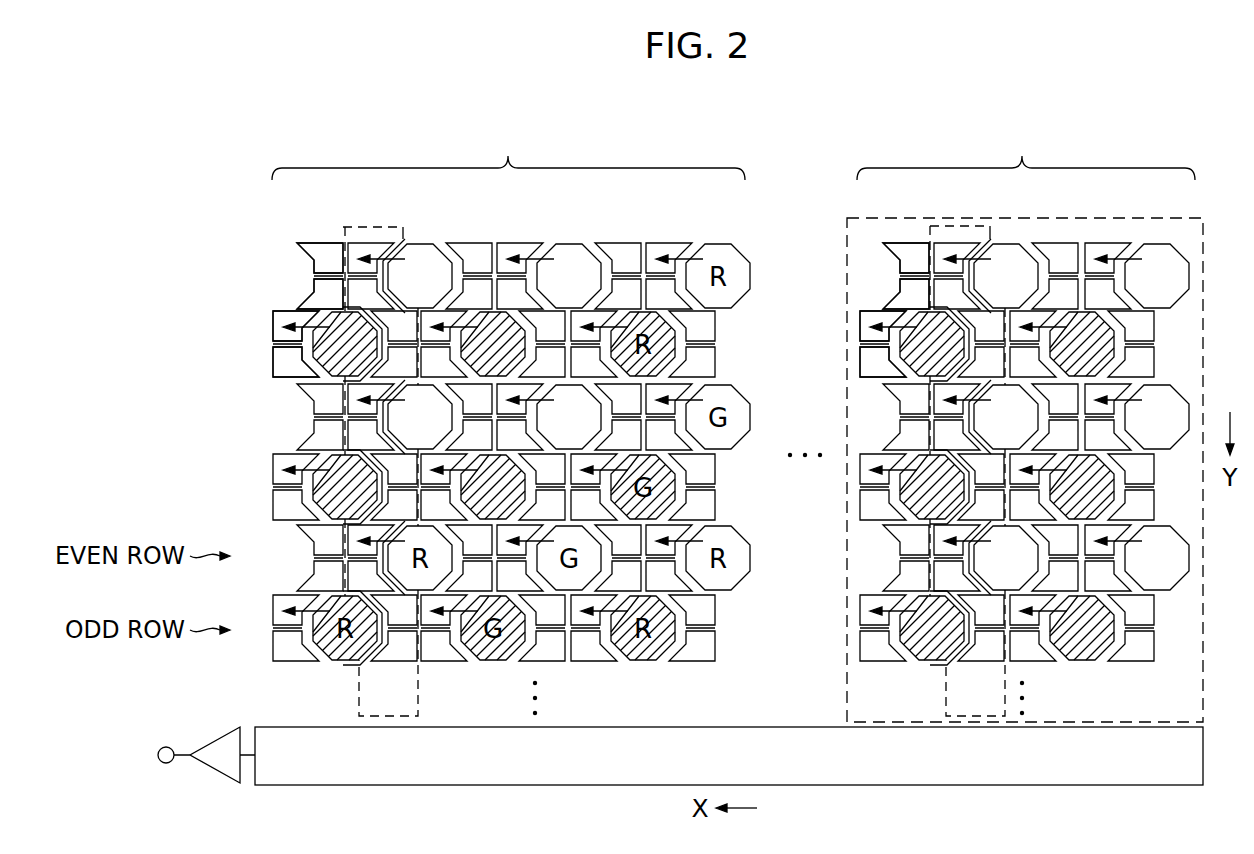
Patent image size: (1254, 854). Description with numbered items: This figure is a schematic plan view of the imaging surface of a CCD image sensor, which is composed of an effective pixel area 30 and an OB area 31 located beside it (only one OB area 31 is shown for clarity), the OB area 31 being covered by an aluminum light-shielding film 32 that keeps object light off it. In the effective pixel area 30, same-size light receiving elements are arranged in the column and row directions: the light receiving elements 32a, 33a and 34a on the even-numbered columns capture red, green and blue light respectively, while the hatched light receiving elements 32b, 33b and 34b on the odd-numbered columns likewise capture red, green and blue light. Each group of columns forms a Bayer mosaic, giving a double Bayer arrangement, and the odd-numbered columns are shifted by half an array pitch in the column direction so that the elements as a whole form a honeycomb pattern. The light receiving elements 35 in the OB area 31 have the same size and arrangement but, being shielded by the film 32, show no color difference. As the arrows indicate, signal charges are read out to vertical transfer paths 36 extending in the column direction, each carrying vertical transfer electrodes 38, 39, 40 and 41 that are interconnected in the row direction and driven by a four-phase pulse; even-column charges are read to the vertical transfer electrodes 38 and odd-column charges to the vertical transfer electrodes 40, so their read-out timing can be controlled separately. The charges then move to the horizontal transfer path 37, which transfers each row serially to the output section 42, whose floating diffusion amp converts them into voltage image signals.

The effective pixel area 30 is at (508, 151).
The OB area 31 is at (1026, 151).
The aluminum light-shielding film 32 is at (1203, 216).
The light receiving element 32a is at (421, 243).
The light receiving element 32b is at (318, 370).
The light receiving element 33a is at (569, 243).
The light receiving element 33b is at (491, 310).
The light receiving element 34a is at (601, 426).
The light receiving element 34b is at (466, 504).
The light receiving element 35 is at (1006, 243).
The vertical transfer path 36 is at (356, 225).
The horizontal transfer path 37 is at (902, 786).
The vertical transfer electrode 38 is at (298, 255).
The vertical transfer electrode 39 is at (298, 297).
The vertical transfer electrode 40 is at (273, 328).
The vertical transfer electrode 41 is at (273, 360).
The output section 42 is at (213, 738).